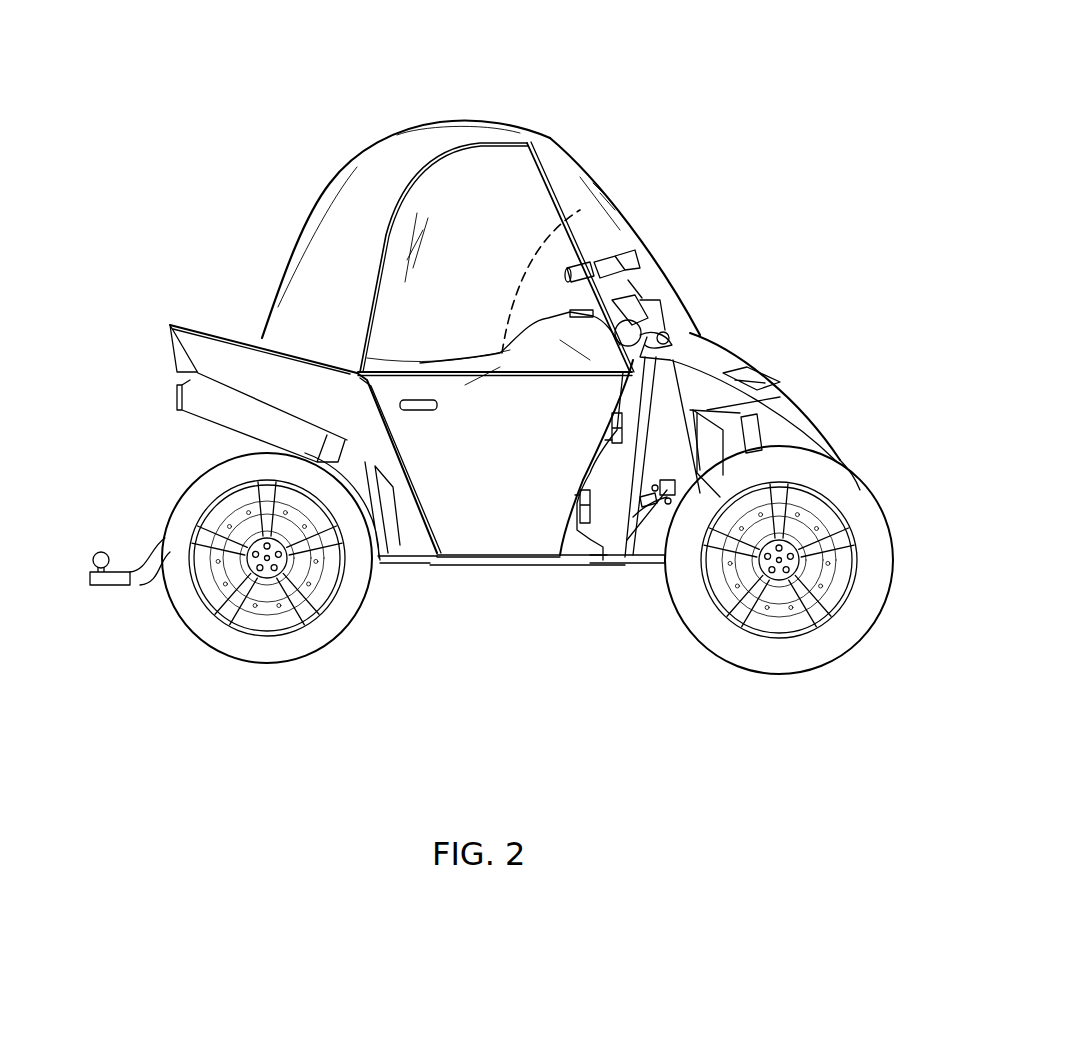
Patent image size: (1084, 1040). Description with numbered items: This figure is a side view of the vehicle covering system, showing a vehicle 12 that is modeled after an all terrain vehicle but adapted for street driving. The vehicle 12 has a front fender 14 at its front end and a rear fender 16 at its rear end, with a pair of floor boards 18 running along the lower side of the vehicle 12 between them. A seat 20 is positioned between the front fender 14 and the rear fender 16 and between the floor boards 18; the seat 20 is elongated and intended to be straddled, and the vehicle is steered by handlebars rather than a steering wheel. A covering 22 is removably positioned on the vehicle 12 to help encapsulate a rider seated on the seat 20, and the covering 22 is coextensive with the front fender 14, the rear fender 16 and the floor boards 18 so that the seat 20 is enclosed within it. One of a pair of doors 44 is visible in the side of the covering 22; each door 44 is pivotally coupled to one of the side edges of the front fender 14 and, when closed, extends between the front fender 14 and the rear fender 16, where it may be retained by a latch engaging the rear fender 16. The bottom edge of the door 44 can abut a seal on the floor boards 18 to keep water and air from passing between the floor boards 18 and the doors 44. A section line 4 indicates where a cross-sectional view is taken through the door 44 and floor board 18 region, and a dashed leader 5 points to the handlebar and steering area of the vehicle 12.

The vehicle 12 is at (852, 428).
The covering 22 is at (532, 110).
The seat 20 is at (585, 200).
The steering assembly 5 is at (683, 330).
The front fender 14 is at (767, 367).
The rear fender 16 is at (220, 420).
The doors 44 is at (457, 540).
The floor boards 18 is at (557, 562).
The section line 4- 4 is at (537, 597).